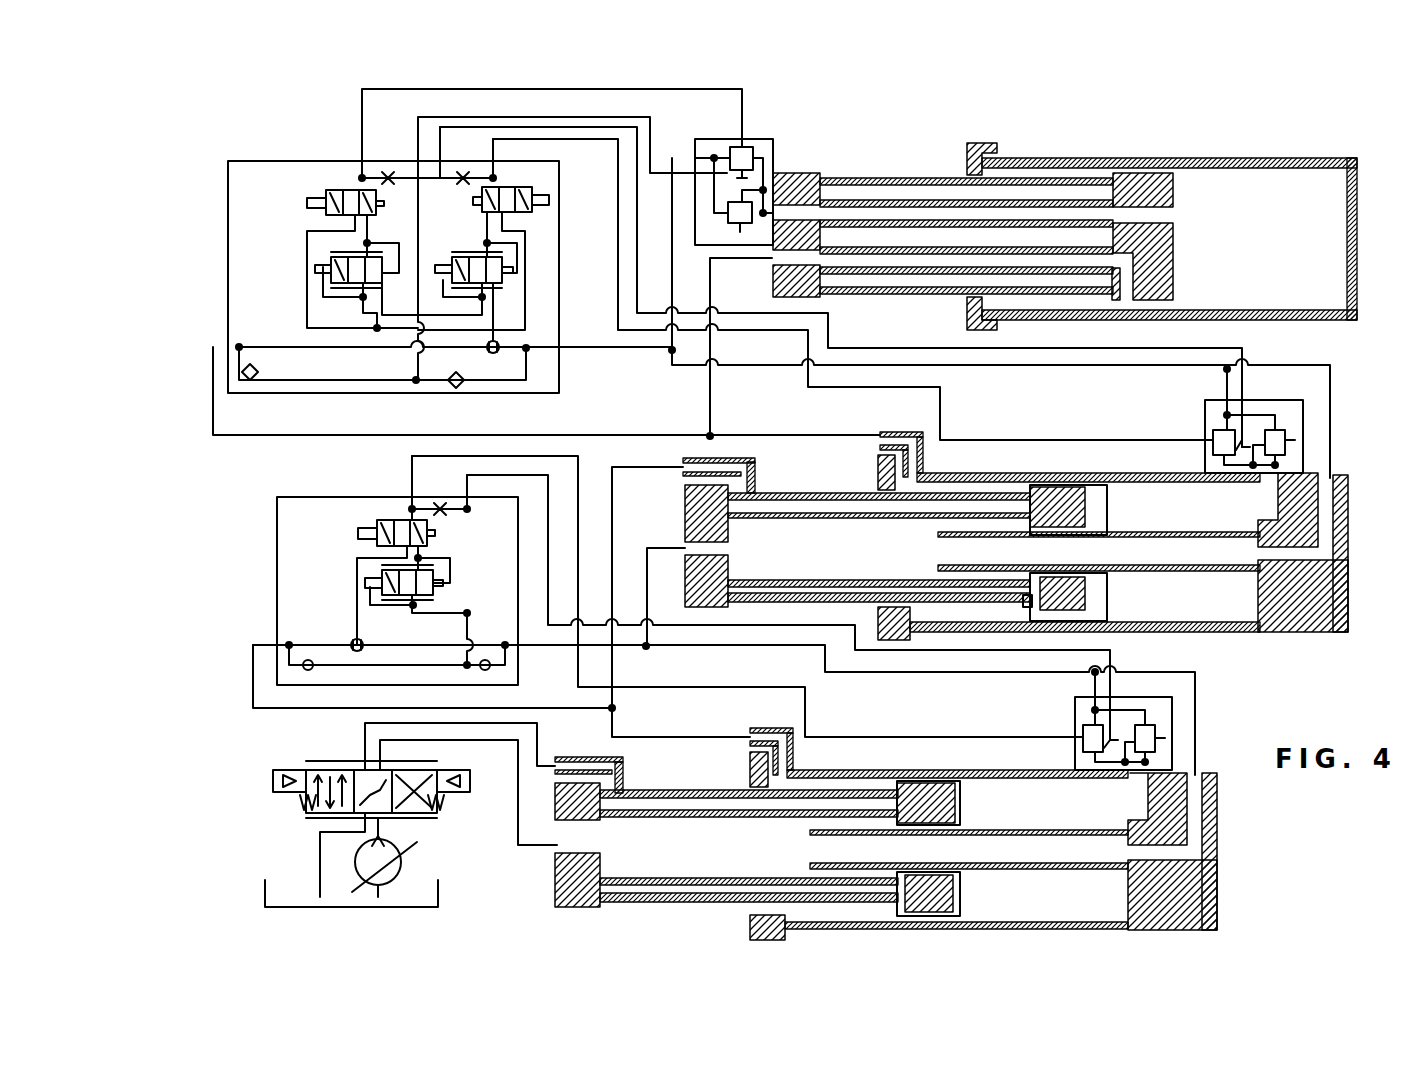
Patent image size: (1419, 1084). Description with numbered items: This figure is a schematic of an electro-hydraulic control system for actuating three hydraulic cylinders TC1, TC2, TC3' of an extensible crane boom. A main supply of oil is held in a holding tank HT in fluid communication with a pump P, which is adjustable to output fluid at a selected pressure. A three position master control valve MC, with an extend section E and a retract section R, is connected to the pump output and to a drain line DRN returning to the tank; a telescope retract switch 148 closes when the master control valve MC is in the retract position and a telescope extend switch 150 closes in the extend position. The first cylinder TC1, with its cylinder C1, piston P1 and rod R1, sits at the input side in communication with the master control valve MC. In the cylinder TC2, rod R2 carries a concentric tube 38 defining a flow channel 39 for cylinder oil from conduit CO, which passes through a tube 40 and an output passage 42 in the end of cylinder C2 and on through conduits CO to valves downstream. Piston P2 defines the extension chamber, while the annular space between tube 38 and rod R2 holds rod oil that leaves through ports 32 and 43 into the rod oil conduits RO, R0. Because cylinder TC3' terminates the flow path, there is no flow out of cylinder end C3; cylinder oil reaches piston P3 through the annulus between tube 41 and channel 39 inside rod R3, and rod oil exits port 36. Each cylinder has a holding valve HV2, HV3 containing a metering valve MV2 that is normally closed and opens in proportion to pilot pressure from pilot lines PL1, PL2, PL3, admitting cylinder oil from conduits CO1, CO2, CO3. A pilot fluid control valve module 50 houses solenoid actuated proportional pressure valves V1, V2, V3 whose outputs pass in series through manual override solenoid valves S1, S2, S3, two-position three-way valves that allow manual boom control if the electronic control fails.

The pilot fluid control valve module 50 is at (228, 278).
The pilot fluid supply line PL3 is at (362, 132).
The drain line DRN is at (530, 117).
The manual override solenoid valve S3 is at (307, 203).
The solenoid actuated pressure reducing proportioning control valve V3 is at (315, 268).
The manual override solenoid valve S2 is at (482, 196).
The solenoid actuated pressure reducing proportioning control valve V2 is at (502, 278).
The holding valve HV3 is at (790, 136).
The cylinder oil conduit CO3 is at (678, 157).
The hydraulic cylinder TC3' is at (911, 267).
The cylinder C3 is at (1260, 312).
The piston P3 is at (1175, 263).
The port 36 is at (770, 263).
The concentric tube 41 is at (880, 255).
The rod R3 is at (910, 298).
The rod oil conduit R0 is at (712, 408).
The pilot fluid supply line PL2 is at (1002, 416).
The holding valve HV2 is at (1308, 400).
The metering valve assembly MV2 is at (1213, 438).
The cylinder oil conduit CO2 is at (1227, 378).
The hydraulic cylinder TC2 is at (1338, 644).
The cylinder C2 is at (1348, 608).
The reciprocating piston P2 is at (1085, 604).
The rod R2 is at (780, 603).
The hydraulic cylinder TC1 is at (1243, 875).
The cylinder C1 is at (1040, 926).
The piston P1 is at (955, 890).
The rod R1 is at (662, 905).
The cylinder oil conduit CO1 is at (1095, 690).
The pilot fluid supply line PL1 is at (853, 737).
The rod oil conduits RO is at (540, 736).
The cylinder oil conduits CO is at (647, 548).
The port 32 is at (758, 474).
The port 43 is at (895, 432).
The concentric tube 38 is at (850, 196).
The flow channel 39 is at (875, 213).
The tube 40 is at (1185, 534).
The output passage 42 is at (1348, 498).
The manual override solenoid valve S1 is at (358, 533).
The solenoid-operated proportional pressure valve V1 is at (365, 583).
The master control valve MC is at (295, 745).
The telescope extend switch 150 is at (277, 776).
The telescope retract switch 148 is at (458, 772).
The extend section E is at (300, 812).
The retract section R is at (440, 815).
The pump P is at (400, 858).
The holding tank HT is at (280, 873).